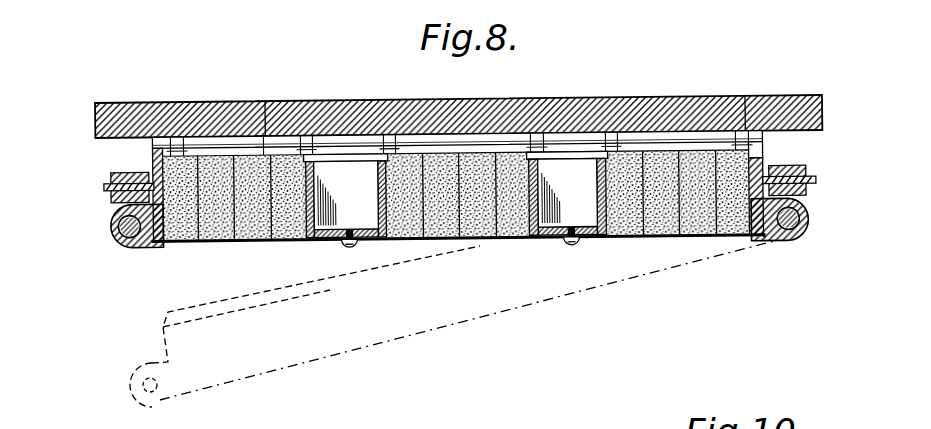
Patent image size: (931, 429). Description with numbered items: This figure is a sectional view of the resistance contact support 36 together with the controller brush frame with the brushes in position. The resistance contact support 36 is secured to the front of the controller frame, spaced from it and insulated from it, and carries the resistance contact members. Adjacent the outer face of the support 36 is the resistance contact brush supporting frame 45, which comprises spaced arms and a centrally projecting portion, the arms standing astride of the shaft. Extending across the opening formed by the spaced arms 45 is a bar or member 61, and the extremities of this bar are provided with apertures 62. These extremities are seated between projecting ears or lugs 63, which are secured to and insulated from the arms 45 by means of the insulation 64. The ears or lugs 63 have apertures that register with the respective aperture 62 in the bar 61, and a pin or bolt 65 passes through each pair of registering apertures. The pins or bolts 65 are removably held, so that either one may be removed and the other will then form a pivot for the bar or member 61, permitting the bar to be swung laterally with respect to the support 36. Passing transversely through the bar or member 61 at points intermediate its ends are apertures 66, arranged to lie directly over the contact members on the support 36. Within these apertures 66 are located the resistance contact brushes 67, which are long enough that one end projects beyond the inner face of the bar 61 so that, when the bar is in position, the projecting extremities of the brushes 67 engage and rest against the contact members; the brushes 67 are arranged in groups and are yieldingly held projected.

The resistance contact support 36 is at (256, 103).
The resistance contact brush supporting frame 45 is at (111, 173).
The bar or member 61 is at (382, 197).
The apertures 62 is at (126, 238).
The projecting ears or lugs 63 is at (112, 212).
The insulation 64 is at (107, 190).
The pin or bolt 65 is at (142, 237).
The apertures 66 is at (300, 214).
The resistance contact brushes 67 is at (227, 217).